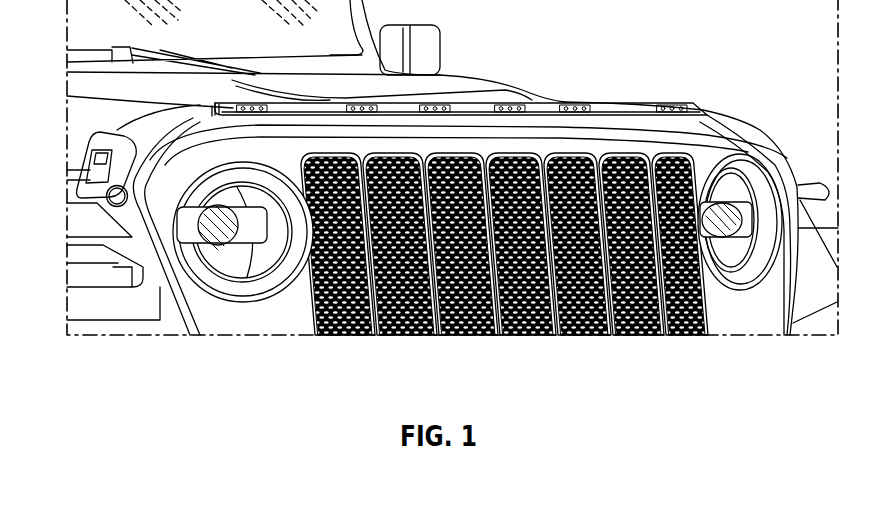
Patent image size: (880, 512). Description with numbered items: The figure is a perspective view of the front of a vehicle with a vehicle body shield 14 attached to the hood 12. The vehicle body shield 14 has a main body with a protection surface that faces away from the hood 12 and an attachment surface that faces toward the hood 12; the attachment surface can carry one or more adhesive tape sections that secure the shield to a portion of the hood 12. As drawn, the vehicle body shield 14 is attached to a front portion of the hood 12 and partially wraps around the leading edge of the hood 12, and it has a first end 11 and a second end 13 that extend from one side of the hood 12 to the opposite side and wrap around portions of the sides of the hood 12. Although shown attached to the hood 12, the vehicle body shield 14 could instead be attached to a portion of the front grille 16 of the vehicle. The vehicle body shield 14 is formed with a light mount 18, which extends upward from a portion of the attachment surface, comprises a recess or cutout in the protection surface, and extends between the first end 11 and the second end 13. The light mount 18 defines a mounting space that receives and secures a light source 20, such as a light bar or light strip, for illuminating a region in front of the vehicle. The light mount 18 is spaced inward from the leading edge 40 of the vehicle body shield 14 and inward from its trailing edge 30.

The first end 11 is at (124, 196).
The hood 12 is at (95, 83).
The second end 13 is at (796, 162).
The vehicle body shield 14 is at (766, 63).
The front grille 16 is at (745, 320).
The light mount 18 is at (235, 105).
The light source 20 is at (521, 100).
The trailing edge 30 is at (117, 131).
The leading edge 40 is at (703, 133).